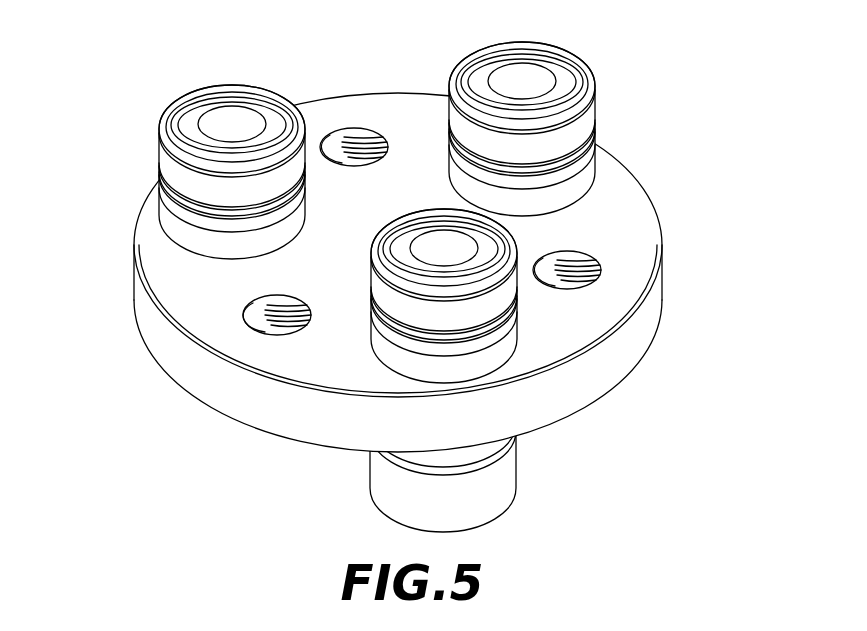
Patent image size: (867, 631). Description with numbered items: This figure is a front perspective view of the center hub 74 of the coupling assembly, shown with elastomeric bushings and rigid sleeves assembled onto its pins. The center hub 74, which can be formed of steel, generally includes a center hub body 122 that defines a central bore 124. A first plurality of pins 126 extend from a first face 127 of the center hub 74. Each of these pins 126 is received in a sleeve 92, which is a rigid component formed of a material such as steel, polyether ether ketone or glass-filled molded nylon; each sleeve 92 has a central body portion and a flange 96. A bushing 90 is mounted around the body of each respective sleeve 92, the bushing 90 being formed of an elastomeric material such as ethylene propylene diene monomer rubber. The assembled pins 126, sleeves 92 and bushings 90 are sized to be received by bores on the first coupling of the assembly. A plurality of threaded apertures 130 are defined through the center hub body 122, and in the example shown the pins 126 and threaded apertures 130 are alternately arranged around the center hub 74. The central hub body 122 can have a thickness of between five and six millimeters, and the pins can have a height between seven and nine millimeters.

The center hub 74 is at (94, 64).
The bushing 90 is at (177, 173).
The sleeve 92 is at (188, 122).
The flange 96 is at (180, 234).
The center hub body 122 is at (262, 412).
The central bore 124 is at (350, 237).
The first plurality of pins 126 is at (222, 118).
The first face 127 is at (177, 273).
The threaded apertures 130 is at (362, 140).